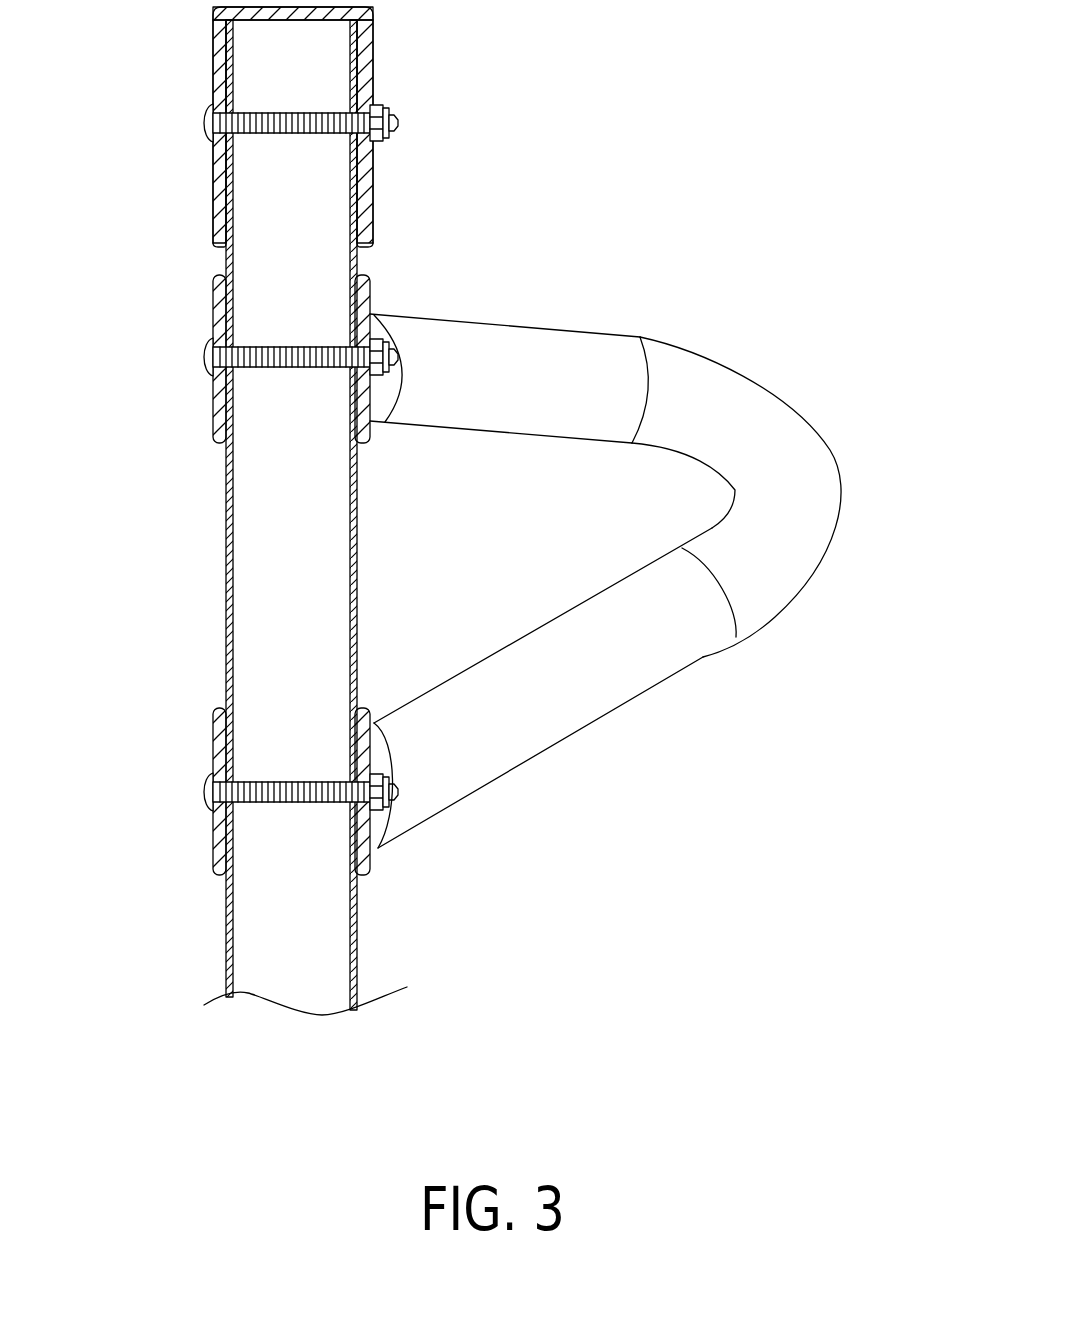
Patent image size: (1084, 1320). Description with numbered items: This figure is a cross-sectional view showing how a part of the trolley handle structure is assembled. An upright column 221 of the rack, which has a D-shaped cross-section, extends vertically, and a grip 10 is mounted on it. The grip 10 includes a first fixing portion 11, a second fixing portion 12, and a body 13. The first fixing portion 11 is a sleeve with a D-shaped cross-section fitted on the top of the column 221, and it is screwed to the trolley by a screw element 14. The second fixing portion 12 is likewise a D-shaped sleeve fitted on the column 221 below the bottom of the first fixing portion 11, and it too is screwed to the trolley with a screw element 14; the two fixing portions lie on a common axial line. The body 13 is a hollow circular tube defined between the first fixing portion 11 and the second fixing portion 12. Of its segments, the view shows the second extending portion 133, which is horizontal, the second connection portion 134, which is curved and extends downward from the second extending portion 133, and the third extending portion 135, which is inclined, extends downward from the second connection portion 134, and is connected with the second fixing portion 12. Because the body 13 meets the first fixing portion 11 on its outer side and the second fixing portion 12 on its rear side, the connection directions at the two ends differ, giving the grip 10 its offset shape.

The grip 10 is at (828, 400).
The first fixing portion 11 is at (220, 303).
The second fixing portion 12 is at (220, 740).
The body 13 is at (665, 547).
The screw element 14 is at (207, 350).
The second extending portion 133 is at (502, 357).
The second connection portion 134 is at (805, 512).
The third extending portion 135 is at (543, 715).
The column 221 is at (228, 563).